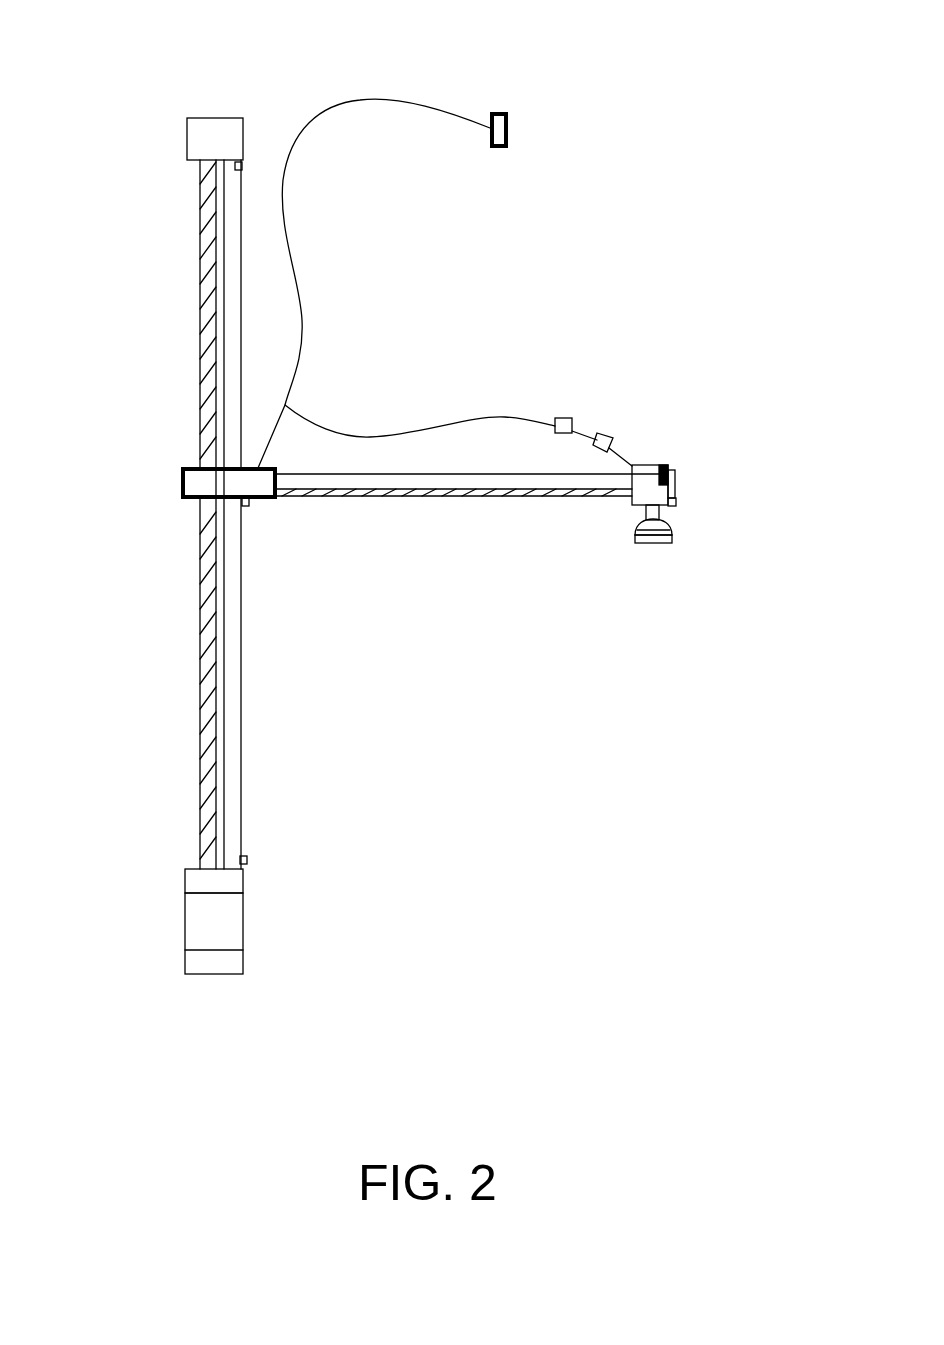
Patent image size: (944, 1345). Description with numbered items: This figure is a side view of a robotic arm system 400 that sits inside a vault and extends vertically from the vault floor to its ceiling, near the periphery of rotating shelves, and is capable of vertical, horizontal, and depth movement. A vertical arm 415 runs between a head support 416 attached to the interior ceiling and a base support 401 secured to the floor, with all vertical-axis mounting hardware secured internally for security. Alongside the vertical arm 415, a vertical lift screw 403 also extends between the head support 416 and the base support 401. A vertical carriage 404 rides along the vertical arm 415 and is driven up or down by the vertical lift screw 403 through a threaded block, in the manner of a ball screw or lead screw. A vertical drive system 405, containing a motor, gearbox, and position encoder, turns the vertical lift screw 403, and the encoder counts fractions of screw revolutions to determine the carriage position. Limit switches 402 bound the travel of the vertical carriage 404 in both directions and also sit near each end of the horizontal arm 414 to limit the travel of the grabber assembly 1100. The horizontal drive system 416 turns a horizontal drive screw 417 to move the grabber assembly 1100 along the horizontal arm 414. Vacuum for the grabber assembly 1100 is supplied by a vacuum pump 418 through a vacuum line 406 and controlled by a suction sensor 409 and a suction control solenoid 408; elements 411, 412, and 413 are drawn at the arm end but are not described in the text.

The robotic arm system 400 is at (528, 80).
The base support 401 is at (193, 960).
The limit switches 402 is at (238, 165).
The vertical lift screw 403 is at (200, 417).
The vertical carriage 404 is at (190, 483).
The vertical drive system 405 is at (193, 878).
The vacuum line 406 is at (296, 262).
The suction control solenoid 408 is at (568, 416).
The suction sensor 409 is at (610, 432).
The arm end block 411 is at (670, 468).
The lamp head 412 is at (672, 535).
The lamp neck 413 is at (666, 513).
The horizontal arm 414 is at (447, 480).
The vertical arm 415 is at (230, 312).
The head support 416 is at (190, 130).
The horizontal drive screw 417 is at (540, 498).
The vacuum pump 418 is at (527, 133).
The grabber assembly 1100 is at (638, 550).